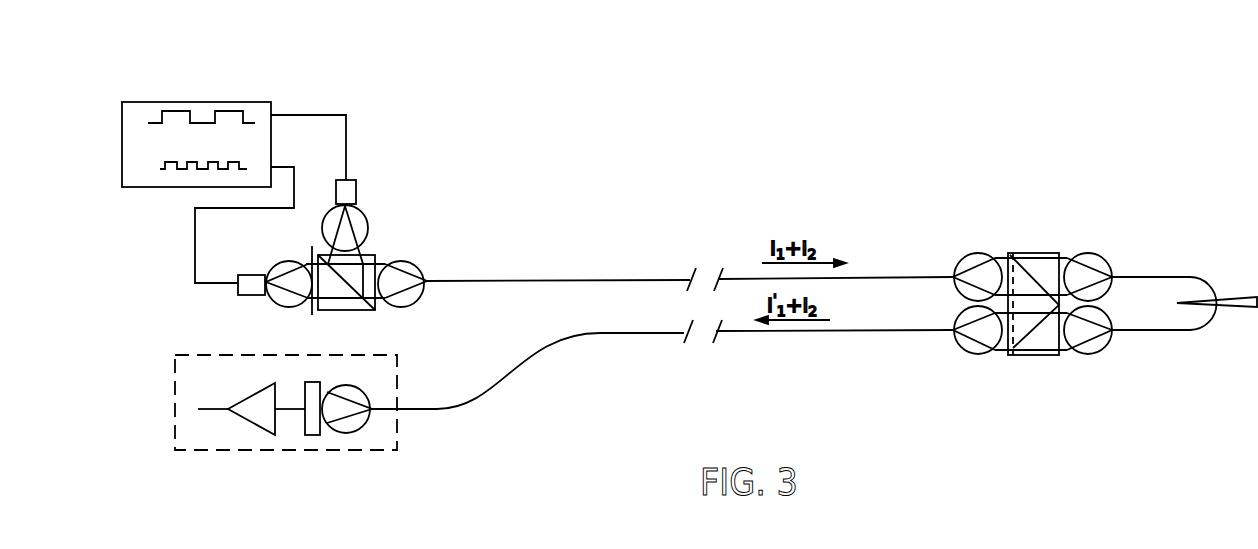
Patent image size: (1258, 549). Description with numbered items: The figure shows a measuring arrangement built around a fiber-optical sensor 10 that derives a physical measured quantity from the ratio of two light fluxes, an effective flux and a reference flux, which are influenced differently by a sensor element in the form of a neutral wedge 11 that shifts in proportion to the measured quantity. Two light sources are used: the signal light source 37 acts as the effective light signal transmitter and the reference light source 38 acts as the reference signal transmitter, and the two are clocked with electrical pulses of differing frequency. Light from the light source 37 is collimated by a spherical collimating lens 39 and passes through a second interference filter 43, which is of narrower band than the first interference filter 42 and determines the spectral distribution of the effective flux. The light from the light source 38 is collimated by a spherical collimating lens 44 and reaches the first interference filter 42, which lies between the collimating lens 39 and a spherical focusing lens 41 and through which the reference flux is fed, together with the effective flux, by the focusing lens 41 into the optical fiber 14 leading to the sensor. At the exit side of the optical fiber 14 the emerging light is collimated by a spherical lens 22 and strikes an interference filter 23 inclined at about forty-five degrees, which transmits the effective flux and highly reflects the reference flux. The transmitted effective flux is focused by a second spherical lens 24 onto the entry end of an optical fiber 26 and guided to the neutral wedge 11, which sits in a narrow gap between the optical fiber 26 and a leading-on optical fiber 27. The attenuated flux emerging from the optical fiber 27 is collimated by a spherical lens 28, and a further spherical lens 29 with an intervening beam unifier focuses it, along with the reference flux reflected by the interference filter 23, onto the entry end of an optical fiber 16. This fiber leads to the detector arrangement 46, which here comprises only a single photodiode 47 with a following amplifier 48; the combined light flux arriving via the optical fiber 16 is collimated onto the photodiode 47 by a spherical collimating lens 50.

The fiber-optical sensor 10 is at (930, 232).
The neutral wedge 11 is at (1243, 297).
The optical fiber 14 is at (631, 278).
The optical fiber 16 is at (627, 338).
The spherical lens 22 is at (973, 258).
The interference filter 23 is at (1029, 262).
The second spherical lens 24 is at (1090, 257).
The optical fiber 26 is at (1155, 275).
The leading-on optical fiber 27 is at (1163, 335).
The spherical lens 28 is at (1090, 353).
The spherical lens 29 is at (973, 352).
The light source 37 is at (247, 275).
The light source 38 is at (337, 186).
The spherical collimating lens 39 is at (288, 302).
The spherical focusing lens 41 is at (408, 260).
The first interference filter 42 is at (368, 262).
The second interference filter 43 is at (311, 254).
The spherical collimating lens 44 is at (358, 225).
The detector arrangement 46 is at (234, 445).
The photodiode 47 is at (313, 438).
The amplifier 48 is at (257, 400).
The spherical collimating lens 50 is at (353, 425).